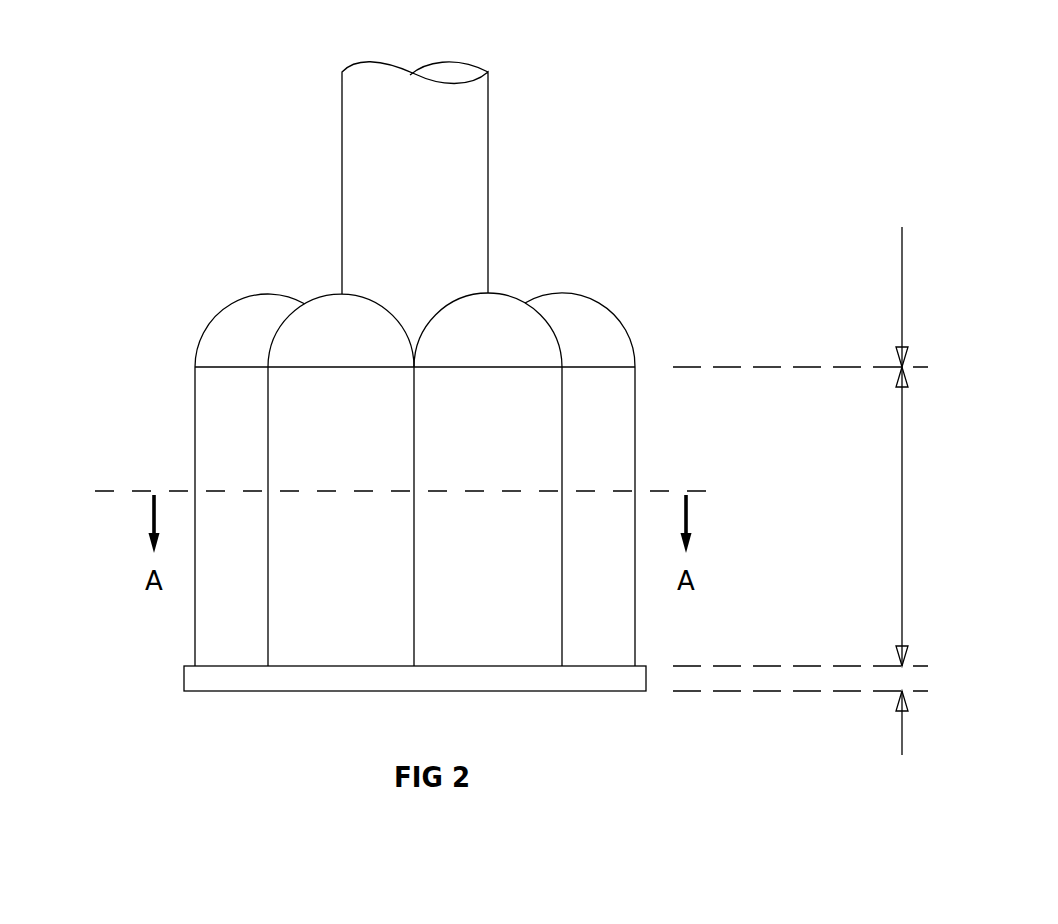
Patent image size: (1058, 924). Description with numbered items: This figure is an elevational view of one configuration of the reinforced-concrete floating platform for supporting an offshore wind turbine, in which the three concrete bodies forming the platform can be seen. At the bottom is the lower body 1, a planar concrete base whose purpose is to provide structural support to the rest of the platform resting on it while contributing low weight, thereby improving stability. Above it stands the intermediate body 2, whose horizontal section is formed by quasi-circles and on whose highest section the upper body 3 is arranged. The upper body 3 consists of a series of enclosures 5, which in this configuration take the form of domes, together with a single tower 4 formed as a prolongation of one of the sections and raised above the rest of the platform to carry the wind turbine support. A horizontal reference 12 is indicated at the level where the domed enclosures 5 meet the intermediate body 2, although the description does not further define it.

The tower 4 is at (342, 110).
The enclosures 5 is at (552, 292).
The interface line between domes and columns 12 is at (195, 367).
The upper body 3 is at (810, 297).
The intermediate body 2 is at (810, 516).
The lower body 1 is at (811, 723).